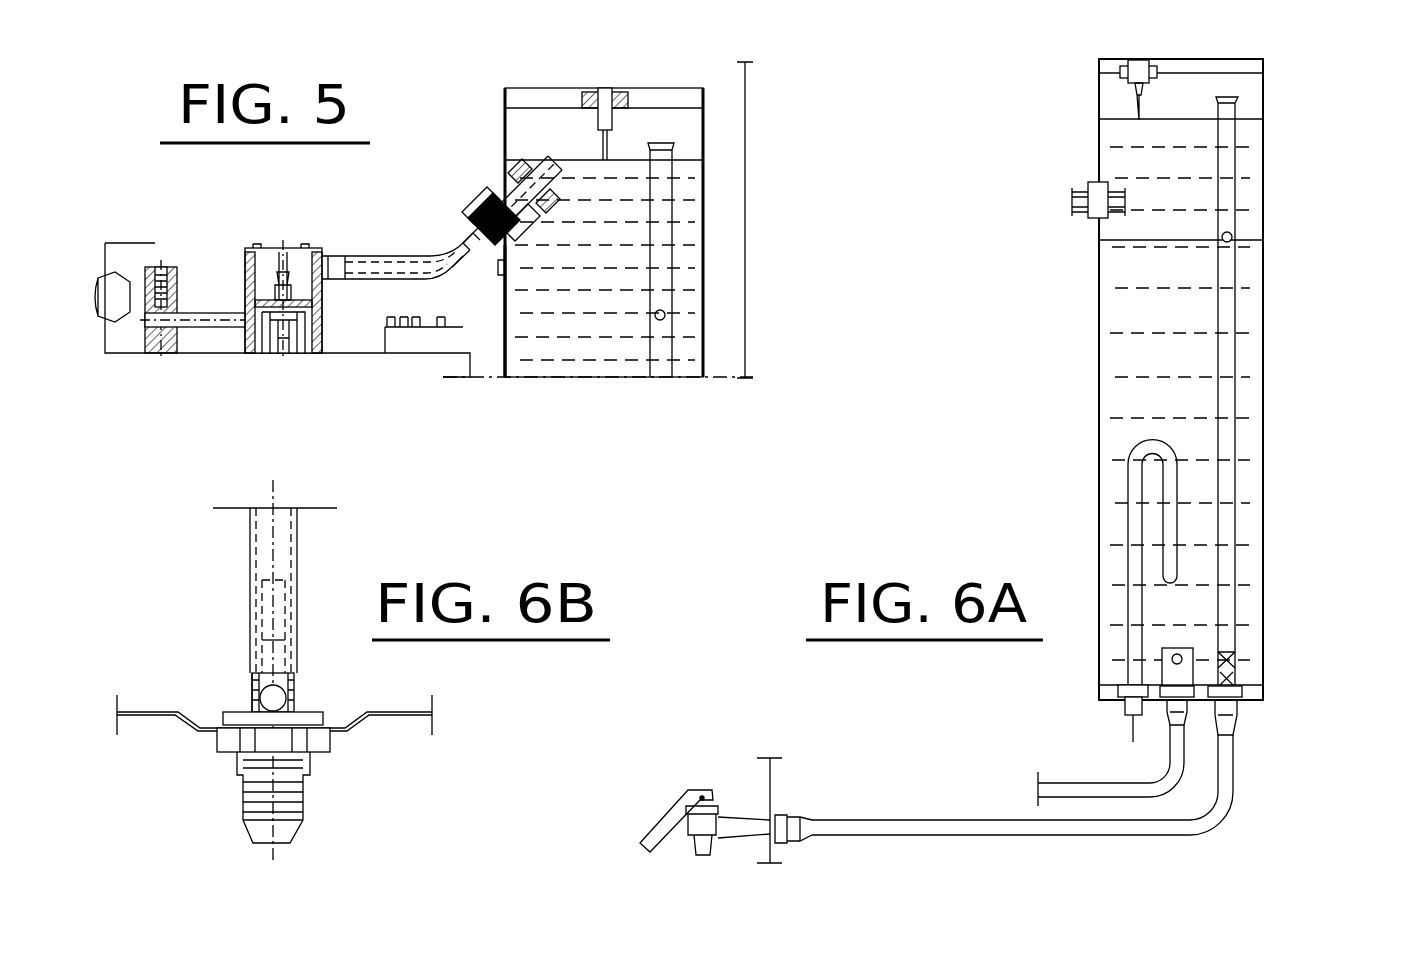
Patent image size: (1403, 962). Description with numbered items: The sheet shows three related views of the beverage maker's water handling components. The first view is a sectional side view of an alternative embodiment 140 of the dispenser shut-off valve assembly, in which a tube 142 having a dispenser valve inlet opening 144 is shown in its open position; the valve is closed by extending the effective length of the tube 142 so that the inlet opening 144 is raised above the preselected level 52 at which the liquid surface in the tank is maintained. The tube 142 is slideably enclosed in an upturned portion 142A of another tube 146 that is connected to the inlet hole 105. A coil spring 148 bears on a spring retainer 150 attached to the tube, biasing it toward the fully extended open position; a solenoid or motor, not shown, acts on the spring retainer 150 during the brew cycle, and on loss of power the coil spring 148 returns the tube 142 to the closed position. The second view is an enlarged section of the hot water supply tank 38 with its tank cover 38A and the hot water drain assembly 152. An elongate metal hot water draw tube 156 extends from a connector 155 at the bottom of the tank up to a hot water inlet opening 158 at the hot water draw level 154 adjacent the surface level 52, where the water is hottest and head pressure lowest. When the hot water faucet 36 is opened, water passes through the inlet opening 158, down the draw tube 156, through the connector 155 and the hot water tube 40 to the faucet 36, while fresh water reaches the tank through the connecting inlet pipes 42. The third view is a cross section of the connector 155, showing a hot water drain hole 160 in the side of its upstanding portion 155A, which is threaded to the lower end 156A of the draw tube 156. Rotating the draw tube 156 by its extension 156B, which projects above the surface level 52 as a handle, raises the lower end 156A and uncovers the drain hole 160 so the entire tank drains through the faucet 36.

In FIG. 5, the inlet hole 105 is at (307, 262).
In FIG. 5, the alternative embodiment of dispenser shut-off valve assembly 140 is at (453, 222).
In FIG. 5, the tube 142 is at (503, 193).
In FIG. 5, the upturned portion 142A is at (483, 240).
In FIG. 5, the dispenser valve inlet opening 144 is at (548, 168).
In FIG. 5, the tube 146 is at (421, 254).
In FIG. 5, the coil spring 148 is at (492, 208).
In FIG. 5, the spring retainer 150 is at (533, 215).
In FIG. 5, the preselected level 52 is at (687, 157).
In FIG. 6A, the preselected level 52 is at (1118, 118).
In FIG. 6B, the hot water draw tube 156 is at (297, 543).
In FIG. 6A, the hot water draw tube 156 is at (1228, 528).
In FIG. 6B, the lower end of hot water draw tube 156A is at (282, 672).
In FIG. 6A, the extension 156B is at (1228, 172).
In FIG. 6B, the connector 155 is at (322, 715).
In FIG. 6A, the connector 155 is at (1245, 683).
In FIG. 6B, the upstanding portion 155A is at (295, 688).
In FIG. 6B, the hot water drain hole 160 is at (263, 698).
In FIG. 6A, the hot water drain hole 160 is at (1233, 678).
In FIG. 6A, the hot water inlet opening 158 is at (1232, 238).
In FIG. 6A, the hot water draw level 154 is at (1120, 238).
In FIG. 6A, the hot water drain assembly 152 is at (1228, 645).
In FIG. 6A, the hot water supply tank 38 is at (1265, 390).
In FIG. 6A, the tank cover 38A is at (1213, 65).
In FIG. 6A, the connecting inlet pipes 42 is at (1147, 788).
In FIG. 6A, the connecting outlet pipes and associated fittings 40 is at (1227, 790).
In FIG. 6A, the hot water faucet 36 is at (673, 808).